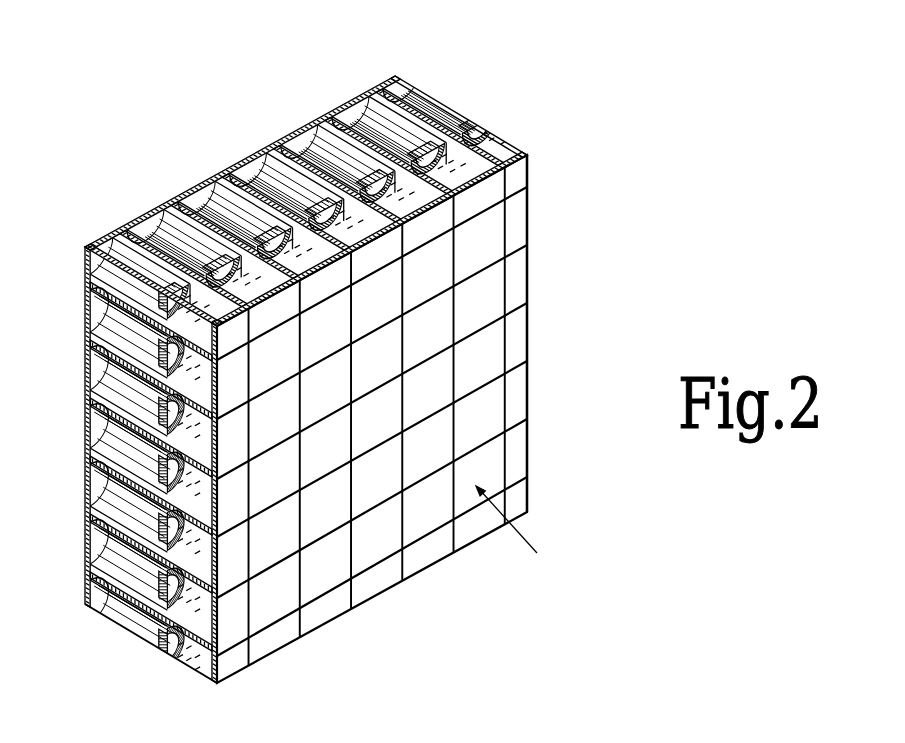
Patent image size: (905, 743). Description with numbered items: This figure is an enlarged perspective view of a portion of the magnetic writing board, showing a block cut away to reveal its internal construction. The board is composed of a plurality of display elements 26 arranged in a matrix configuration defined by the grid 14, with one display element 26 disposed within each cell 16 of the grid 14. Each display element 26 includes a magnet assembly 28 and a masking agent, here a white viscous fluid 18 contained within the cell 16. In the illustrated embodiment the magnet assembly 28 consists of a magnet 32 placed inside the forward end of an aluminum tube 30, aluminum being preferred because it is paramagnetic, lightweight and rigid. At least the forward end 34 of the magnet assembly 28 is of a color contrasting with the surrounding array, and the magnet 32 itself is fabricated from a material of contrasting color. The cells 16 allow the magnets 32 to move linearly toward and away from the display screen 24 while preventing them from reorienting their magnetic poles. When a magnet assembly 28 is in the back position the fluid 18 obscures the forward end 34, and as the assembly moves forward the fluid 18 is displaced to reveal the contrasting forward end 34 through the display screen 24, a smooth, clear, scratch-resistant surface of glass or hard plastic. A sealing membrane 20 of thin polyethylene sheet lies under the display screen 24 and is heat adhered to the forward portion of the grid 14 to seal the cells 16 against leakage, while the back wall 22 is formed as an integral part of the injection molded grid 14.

The grid 14 is at (510, 362).
The cell 16 is at (523, 440).
The fluid 18 is at (356, 96).
The sealing membrane 20 is at (532, 155).
The back wall 22 is at (241, 162).
The display screen 24 is at (520, 527).
The display element 26 is at (85, 242).
The magnet assembly 28 is at (124, 250).
The aluminum tube 30 is at (88, 296).
The magnet 32 is at (88, 334).
The forward end 34 is at (164, 212).